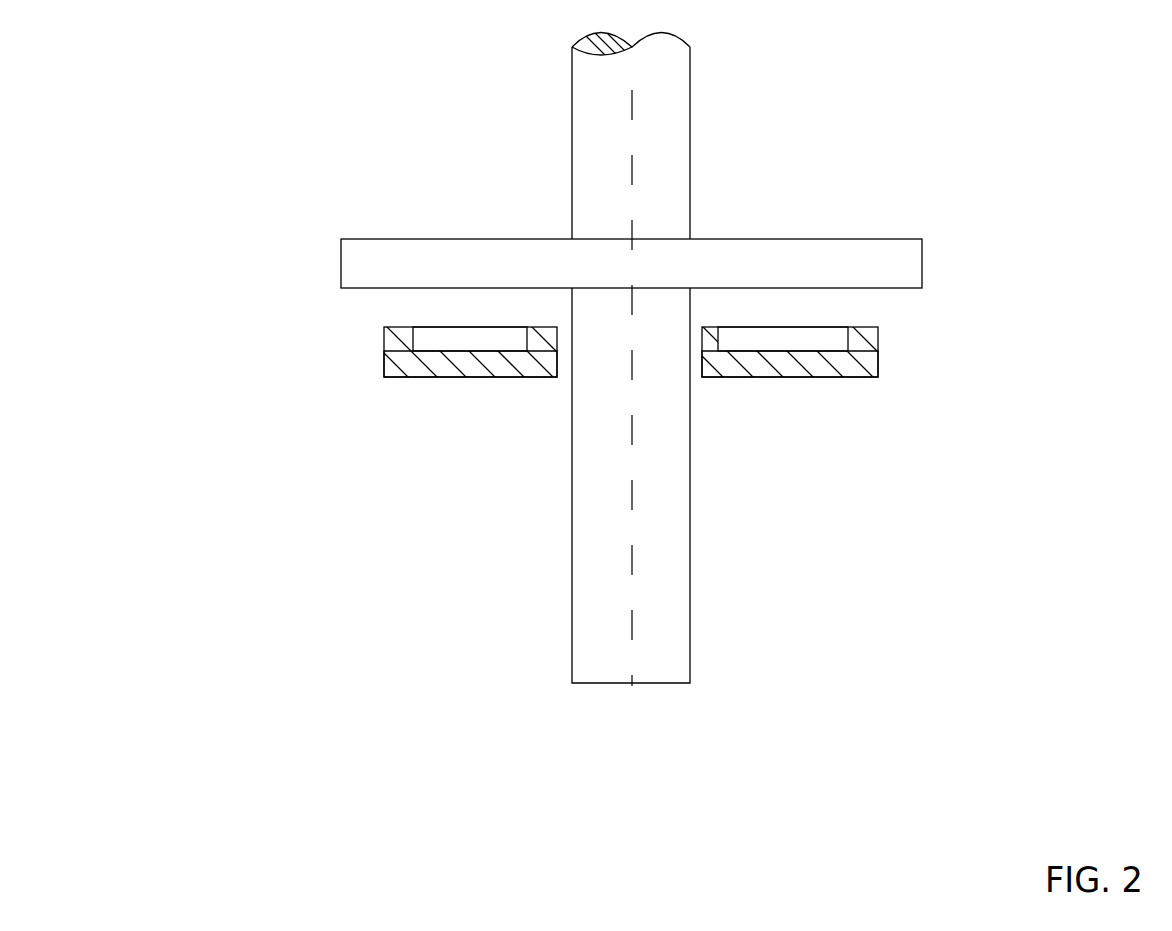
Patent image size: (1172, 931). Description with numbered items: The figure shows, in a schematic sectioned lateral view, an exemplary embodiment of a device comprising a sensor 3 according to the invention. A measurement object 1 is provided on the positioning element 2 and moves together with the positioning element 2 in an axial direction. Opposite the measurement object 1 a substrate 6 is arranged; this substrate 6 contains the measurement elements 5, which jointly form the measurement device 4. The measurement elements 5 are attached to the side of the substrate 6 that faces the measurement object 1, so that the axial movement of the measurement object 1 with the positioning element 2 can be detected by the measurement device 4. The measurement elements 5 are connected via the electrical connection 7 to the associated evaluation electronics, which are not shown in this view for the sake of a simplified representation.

The measurement object 1 is at (865, 253).
The positioning element 2 is at (677, 157).
The sensor 3 is at (398, 393).
The measurement device 4 is at (452, 335).
The measurement element 5 is at (813, 338).
The substrate 6 is at (770, 377).
The electrical connection 7 is at (470, 378).